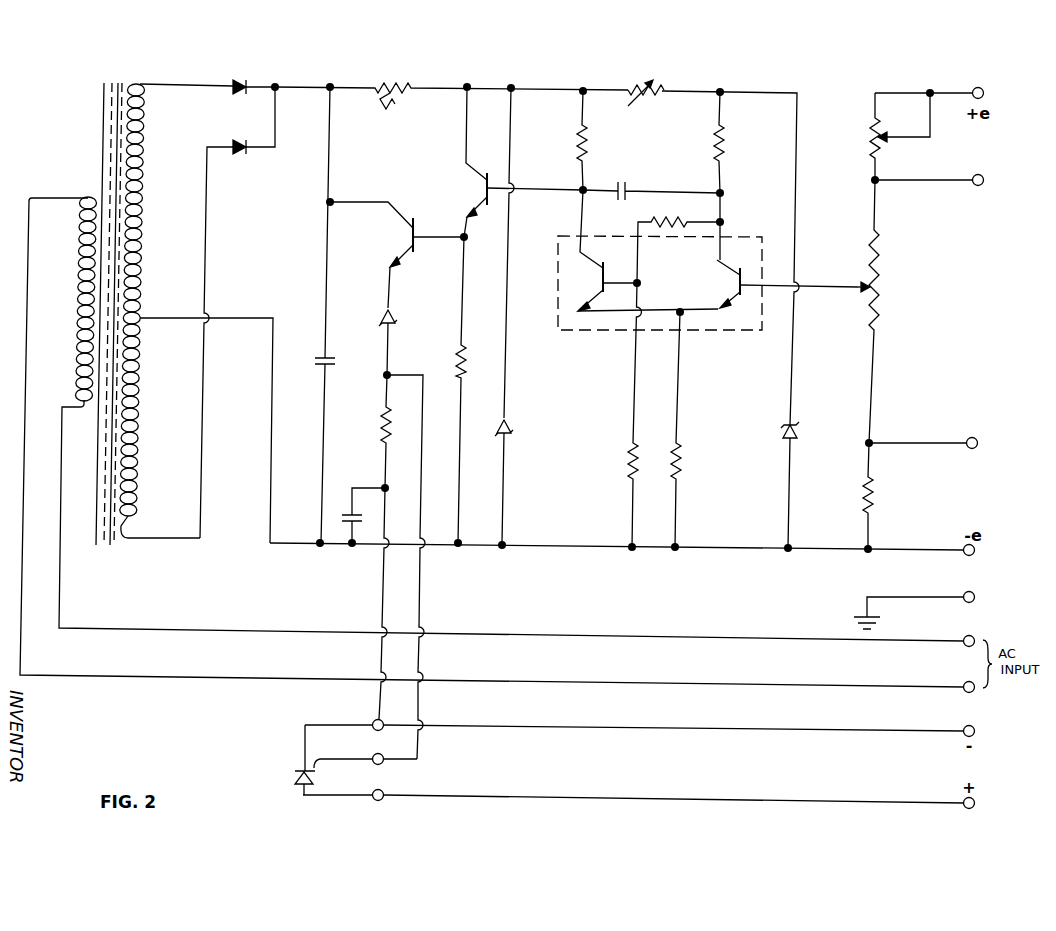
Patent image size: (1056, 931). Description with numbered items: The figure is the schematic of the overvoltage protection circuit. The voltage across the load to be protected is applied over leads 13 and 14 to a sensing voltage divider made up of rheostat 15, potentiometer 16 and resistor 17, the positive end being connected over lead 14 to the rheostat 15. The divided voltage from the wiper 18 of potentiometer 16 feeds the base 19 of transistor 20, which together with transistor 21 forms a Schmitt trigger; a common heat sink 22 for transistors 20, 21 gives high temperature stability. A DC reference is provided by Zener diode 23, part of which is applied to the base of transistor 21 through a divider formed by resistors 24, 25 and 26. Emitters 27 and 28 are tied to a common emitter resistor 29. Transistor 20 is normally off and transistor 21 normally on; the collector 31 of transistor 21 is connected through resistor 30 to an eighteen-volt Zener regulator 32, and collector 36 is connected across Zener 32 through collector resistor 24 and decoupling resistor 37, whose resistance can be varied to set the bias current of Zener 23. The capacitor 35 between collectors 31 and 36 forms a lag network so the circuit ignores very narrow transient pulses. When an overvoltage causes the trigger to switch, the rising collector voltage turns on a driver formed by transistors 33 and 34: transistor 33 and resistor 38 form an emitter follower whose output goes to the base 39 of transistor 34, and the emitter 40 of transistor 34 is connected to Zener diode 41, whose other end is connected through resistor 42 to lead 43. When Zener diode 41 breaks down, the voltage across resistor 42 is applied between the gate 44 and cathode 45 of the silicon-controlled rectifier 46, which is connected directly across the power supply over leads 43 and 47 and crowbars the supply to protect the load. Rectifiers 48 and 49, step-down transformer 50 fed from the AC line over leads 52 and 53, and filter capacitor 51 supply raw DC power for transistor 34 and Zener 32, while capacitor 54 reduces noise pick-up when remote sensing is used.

The lead 13 is at (905, 549).
The lead 14 is at (942, 92).
The rheostat 15 is at (872, 136).
The potentiometer 16 is at (878, 286).
The resistor 17 is at (874, 501).
The wiper 18 is at (867, 297).
The base 19 is at (738, 292).
The transistor 20 is at (773, 276).
The transistor 21 is at (602, 268).
The common heat sink 22 is at (604, 334).
The Zener diode 23 is at (786, 425).
The resistor 24 is at (728, 139).
The resistor 25 is at (665, 217).
The resistor 26 is at (629, 457).
The emitter 27 is at (733, 306).
The emitter 28 is at (596, 292).
The common emitter resistor 29 is at (679, 457).
The resistor 30 is at (588, 147).
The collector 31 is at (600, 250).
The Zener regulator 32 is at (512, 420).
The transistor 33 is at (487, 176).
The transistor 34 is at (415, 221).
The capacitor 35 is at (627, 185).
The collector 36 is at (718, 271).
The decoupling resistor 37 is at (641, 100).
The resistor 38 is at (458, 359).
The base 39 is at (415, 248).
The emitter 40 is at (405, 258).
The Zener diode 41 is at (400, 305).
The resistor 42 is at (380, 431).
The lead 43 is at (551, 727).
The gate 44 is at (316, 765).
The cathode 45 is at (303, 770).
The silicon-controlled rectifier 46 is at (296, 779).
The lead 47 is at (551, 798).
The rectifier 48 is at (243, 152).
The rectifier 49 is at (243, 80).
The transformer 50 is at (103, 150).
The filter capacitor 51 is at (320, 363).
The lead 52 is at (551, 637).
The lead 53 is at (551, 682).
The capacitor 54 is at (345, 515).